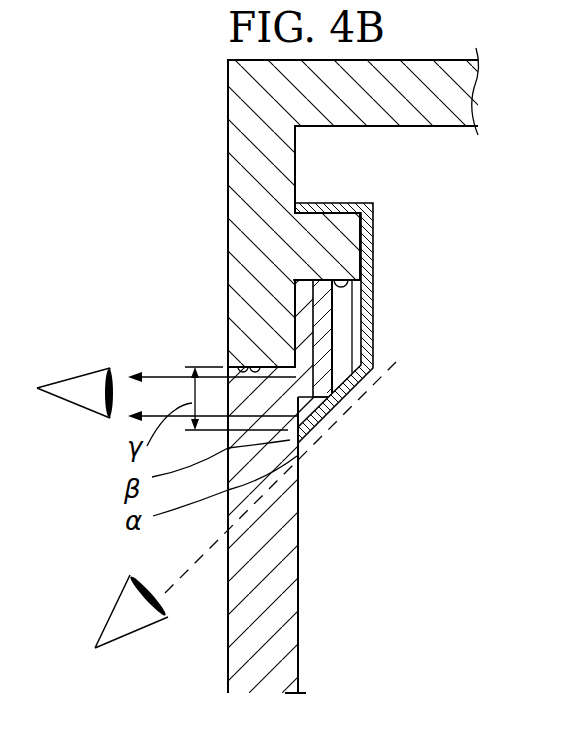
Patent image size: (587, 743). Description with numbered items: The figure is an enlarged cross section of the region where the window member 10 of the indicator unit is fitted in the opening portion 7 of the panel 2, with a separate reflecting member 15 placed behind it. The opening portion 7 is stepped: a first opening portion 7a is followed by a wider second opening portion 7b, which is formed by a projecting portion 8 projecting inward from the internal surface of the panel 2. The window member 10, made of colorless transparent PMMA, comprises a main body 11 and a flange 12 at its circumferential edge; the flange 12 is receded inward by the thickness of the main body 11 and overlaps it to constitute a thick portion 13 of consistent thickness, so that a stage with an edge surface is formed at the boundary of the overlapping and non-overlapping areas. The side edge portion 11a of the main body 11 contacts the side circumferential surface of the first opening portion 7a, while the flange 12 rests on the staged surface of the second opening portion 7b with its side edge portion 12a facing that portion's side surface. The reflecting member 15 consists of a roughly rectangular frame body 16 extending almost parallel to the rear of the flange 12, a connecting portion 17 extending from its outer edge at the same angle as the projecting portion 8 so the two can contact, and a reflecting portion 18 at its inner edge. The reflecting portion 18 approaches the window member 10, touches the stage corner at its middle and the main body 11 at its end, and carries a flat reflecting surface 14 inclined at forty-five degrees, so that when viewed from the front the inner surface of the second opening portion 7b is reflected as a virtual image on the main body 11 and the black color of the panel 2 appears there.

The panel 2 is at (222, 110).
The opening portion 7 is at (242, 366).
The first opening portion 7a is at (252, 366).
The second opening portion 7b is at (347, 283).
The projecting portion 8 is at (338, 224).
The window member 10 is at (306, 634).
The main body 11 is at (298, 555).
The side edge portion 11a is at (268, 366).
The flange 12 is at (330, 297).
The side edge portion 12a is at (298, 281).
The thick portion 13 is at (322, 368).
The reflecting surface 14 is at (325, 403).
The reflecting member 15 is at (380, 303).
The frame body 16 is at (373, 222).
The connecting portion 17 is at (315, 203).
The reflecting portion 18 is at (347, 388).